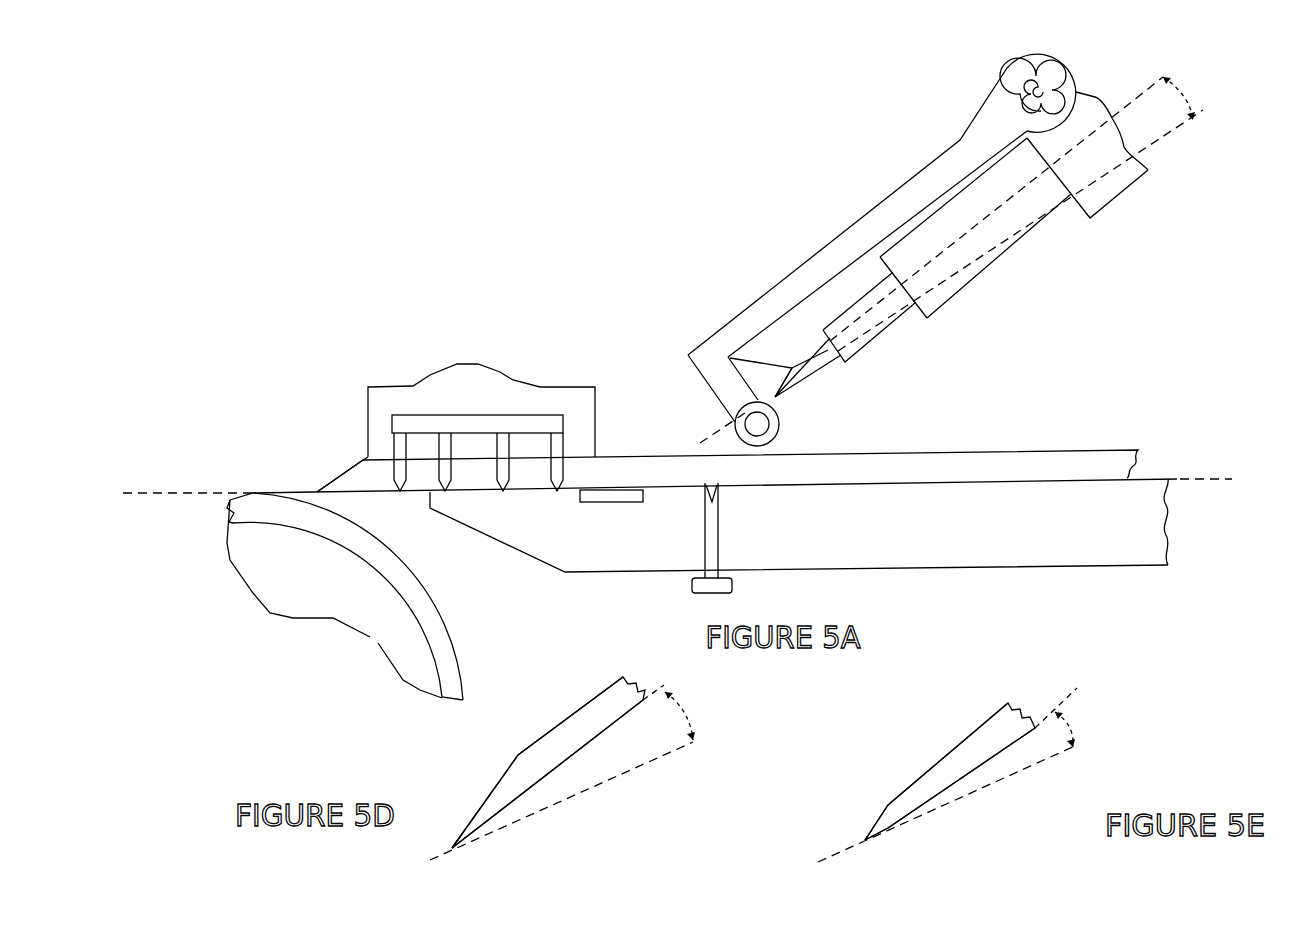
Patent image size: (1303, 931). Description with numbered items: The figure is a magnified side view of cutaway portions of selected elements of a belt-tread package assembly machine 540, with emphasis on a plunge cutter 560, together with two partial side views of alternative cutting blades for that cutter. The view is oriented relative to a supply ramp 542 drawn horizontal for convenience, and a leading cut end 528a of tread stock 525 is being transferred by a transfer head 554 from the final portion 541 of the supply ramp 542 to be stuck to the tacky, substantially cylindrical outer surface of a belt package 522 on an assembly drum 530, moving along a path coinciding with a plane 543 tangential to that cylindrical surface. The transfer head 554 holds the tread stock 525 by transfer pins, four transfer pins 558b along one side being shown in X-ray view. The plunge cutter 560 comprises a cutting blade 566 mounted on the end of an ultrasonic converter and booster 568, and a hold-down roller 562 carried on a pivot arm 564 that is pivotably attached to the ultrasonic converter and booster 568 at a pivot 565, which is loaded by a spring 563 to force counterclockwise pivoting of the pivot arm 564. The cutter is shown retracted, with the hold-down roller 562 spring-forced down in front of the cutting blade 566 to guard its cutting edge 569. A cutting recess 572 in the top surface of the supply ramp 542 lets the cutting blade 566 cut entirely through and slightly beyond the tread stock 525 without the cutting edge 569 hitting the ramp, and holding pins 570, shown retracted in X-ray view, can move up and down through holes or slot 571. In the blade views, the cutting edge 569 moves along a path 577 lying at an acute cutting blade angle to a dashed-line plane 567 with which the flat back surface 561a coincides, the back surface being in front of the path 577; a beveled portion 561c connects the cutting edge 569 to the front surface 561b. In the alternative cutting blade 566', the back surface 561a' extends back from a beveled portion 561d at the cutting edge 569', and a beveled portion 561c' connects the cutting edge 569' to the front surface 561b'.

In FIG. 5A, the belt package 522 is at (467, 658).
In FIG. 5A, the tread stock 525 is at (970, 455).
In FIG. 5A, the leading cut end 528a is at (337, 470).
In FIG. 5A, the assembly drum 530 is at (385, 655).
In FIG. 5A, the belt-tread package assembly machine 540 is at (592, 292).
In FIG. 5A, the final portion 541 is at (487, 520).
In FIG. 5A, the supply ramp 542 is at (1195, 519).
In FIG. 5A, the plane 543 is at (155, 492).
In FIG. 5A, the transfer head 554 is at (367, 423).
In FIG. 5A, the transfer pins 558b is at (410, 440).
In FIG. 5A, the plunge cutter 560 is at (894, 166).
In FIG. 5A, the back surface 561a is at (862, 369).
In FIG. 5D, the back surface 561a is at (547, 774).
In FIG. 5A, the front surface 561b is at (730, 342).
In FIG. 5D, the front surface 561b is at (547, 716).
In FIG. 5D, the beveled portion 561c is at (476, 801).
In FIG. 5E, the back surface 561a' is at (972, 778).
In FIG. 5E, the front surface 561b' is at (944, 754).
In FIG. 5E, the beveled portion 561c' is at (863, 797).
In FIG. 5E, the beveled portion 561d is at (892, 833).
In FIG. 5A, the hold-down roller 562 is at (779, 434).
In FIG. 5A, the spring 563 is at (1020, 86).
In FIG. 5A, the pivot arm 564 is at (958, 165).
In FIG. 5A, the pivot 565 is at (1060, 57).
In FIG. 5A, the cutting blade 566 is at (824, 323).
In FIG. 5D, the cutting blade 566 is at (548, 757).
In FIG. 5E, the cutting blade 566' is at (950, 754).
In FIG. 5A, the plane 567 is at (1137, 103).
In FIG. 5D, the plane 567 is at (663, 682).
In FIG. 5E, the plane 567 is at (1058, 703).
In FIG. 5A, the ultrasonic converter and booster 568 is at (1118, 192).
In FIG. 5A, the cutting edge 569 is at (843, 392).
In FIG. 5D, the cutting edge 569 is at (442, 824).
In FIG. 5E, the cutting edge 569' is at (841, 819).
In FIG. 5A, the holding pins 570 is at (718, 520).
In FIG. 5A, the holes or slot 571 is at (717, 493).
In FIG. 5A, the cutting recess 572 is at (587, 503).
In FIG. 5A, the path 577 is at (1158, 141).
In FIG. 5D, the path 577 is at (700, 739).
In FIG. 5E, the path 577 is at (1080, 747).